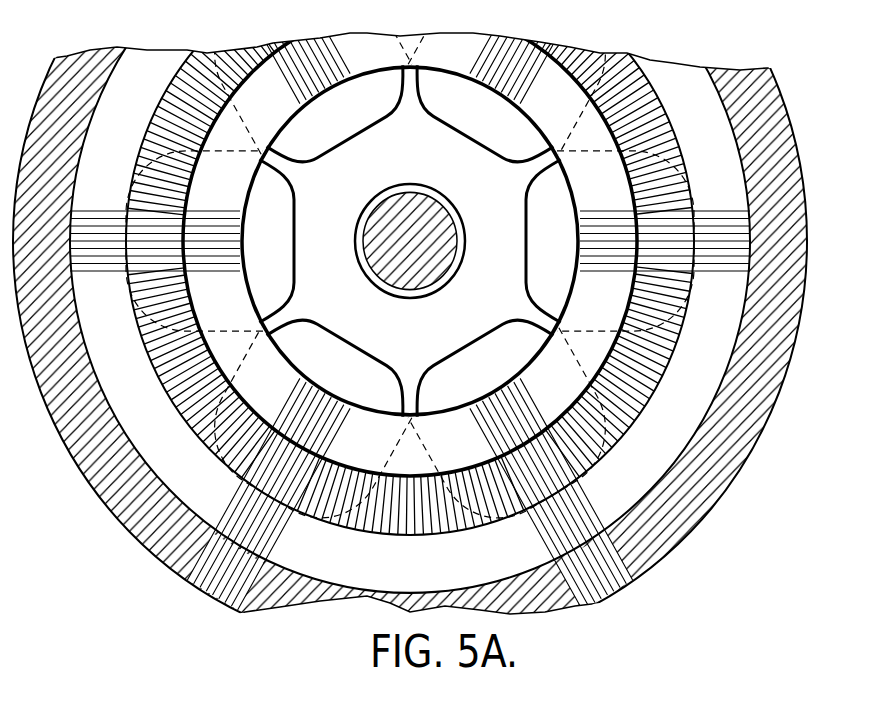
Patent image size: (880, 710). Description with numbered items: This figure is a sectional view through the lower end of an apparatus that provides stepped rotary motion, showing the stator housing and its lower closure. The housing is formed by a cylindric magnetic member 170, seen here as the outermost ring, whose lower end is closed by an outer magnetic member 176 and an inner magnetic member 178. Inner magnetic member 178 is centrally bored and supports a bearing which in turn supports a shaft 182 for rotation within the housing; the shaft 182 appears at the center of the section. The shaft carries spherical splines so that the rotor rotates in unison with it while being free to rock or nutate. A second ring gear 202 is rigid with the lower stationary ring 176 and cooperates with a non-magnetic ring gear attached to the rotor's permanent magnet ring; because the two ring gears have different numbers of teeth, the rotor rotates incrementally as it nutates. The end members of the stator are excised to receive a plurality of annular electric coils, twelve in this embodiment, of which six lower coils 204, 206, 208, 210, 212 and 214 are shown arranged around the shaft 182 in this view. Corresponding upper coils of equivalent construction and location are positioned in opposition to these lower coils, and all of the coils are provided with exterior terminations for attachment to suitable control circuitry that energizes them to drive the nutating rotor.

The cylindric magnetic member 170 is at (752, 88).
The outer magnetic member 176 is at (648, 472).
The inner magnetic member 178 is at (600, 358).
The shaft 182 is at (430, 234).
The second ring gear 202 is at (652, 104).
The annular electric coil 204 is at (353, 127).
The annular electric coil 206 is at (493, 143).
The annular electric coil 208 is at (533, 255).
The annular electric coil 210 is at (453, 362).
The annular electric coil 212 is at (330, 338).
The annular electric coil 214 is at (287, 255).